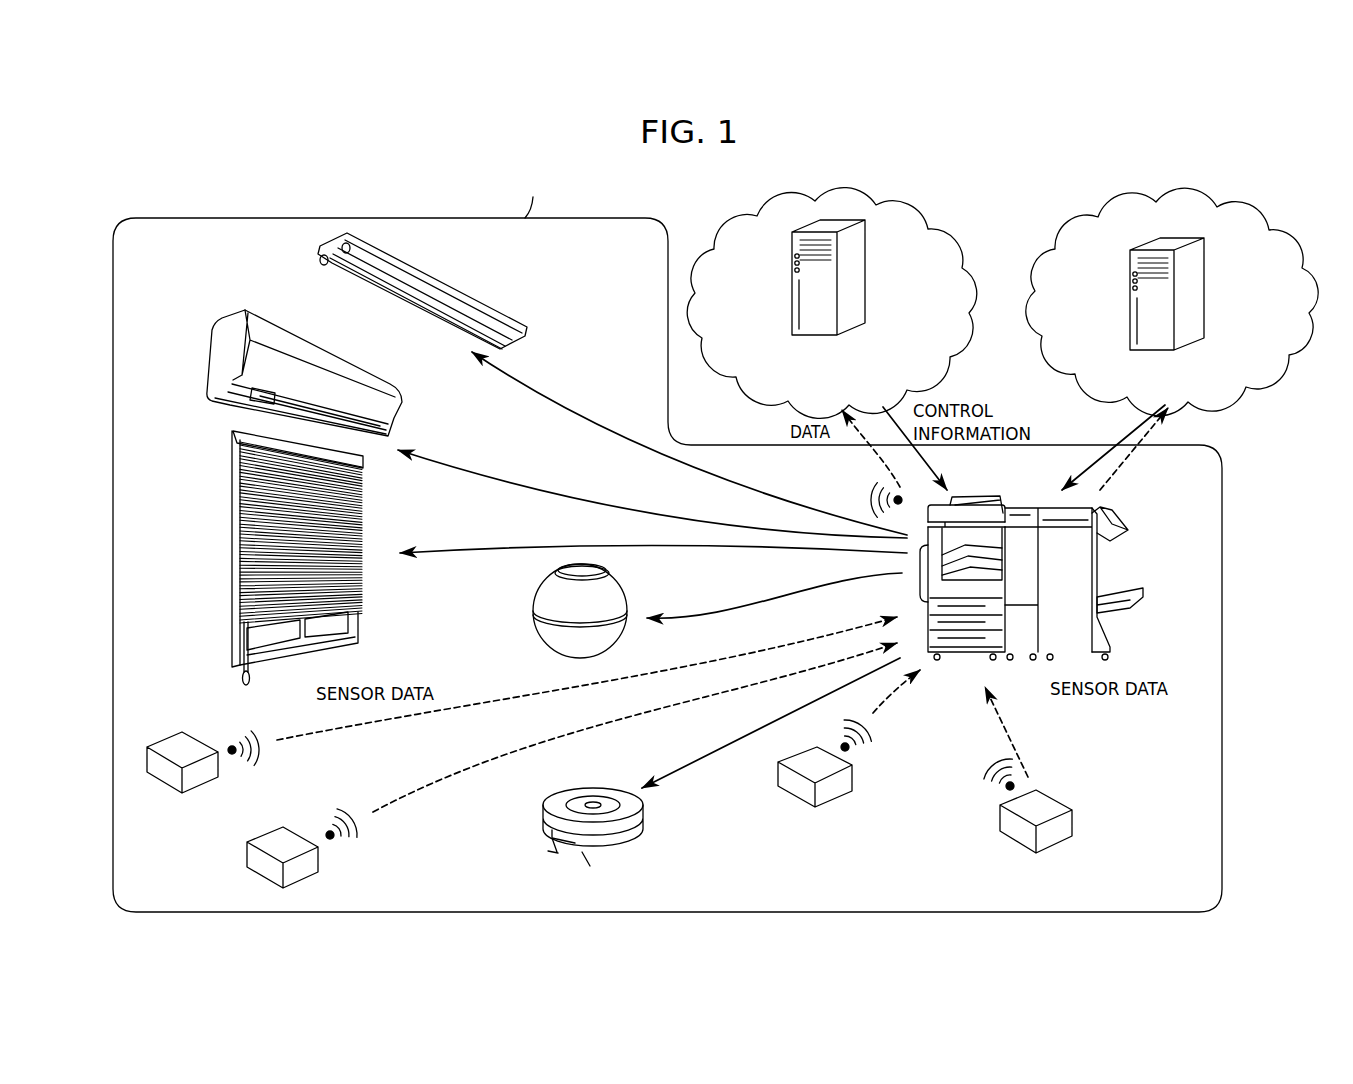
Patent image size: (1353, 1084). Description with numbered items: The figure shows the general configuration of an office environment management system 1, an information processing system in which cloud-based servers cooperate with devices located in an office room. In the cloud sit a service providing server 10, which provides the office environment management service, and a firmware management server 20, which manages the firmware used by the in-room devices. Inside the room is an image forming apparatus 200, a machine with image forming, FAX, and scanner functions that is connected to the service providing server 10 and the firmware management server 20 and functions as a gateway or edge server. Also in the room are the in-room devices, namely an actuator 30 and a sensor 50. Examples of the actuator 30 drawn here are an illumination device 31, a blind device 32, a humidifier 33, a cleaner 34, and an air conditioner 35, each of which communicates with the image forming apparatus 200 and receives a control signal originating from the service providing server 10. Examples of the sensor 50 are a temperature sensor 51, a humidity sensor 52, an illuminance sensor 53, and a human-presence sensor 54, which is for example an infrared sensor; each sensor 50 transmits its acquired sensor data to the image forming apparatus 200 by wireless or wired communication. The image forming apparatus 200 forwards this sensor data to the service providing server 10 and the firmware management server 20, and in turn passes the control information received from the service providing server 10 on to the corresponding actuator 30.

The office environment management system 1 is at (168, 189).
The service providing server 10 is at (815, 228).
The firmware management server 20 is at (1150, 245).
The image forming apparatus 200 is at (1127, 513).
The actuator 30 is at (454, 550).
The illumination device 31 is at (300, 263).
The blind device 32 is at (226, 600).
The humidifier 33 is at (528, 630).
The cleaner 34 is at (647, 838).
The air conditioner 35 is at (217, 420).
The sensor 50 is at (647, 805).
The temperature sensor 51 is at (1068, 791).
The humidity sensor 52 is at (842, 807).
The illuminance sensor 53 is at (176, 803).
The human-presence sensor 54 is at (333, 872).